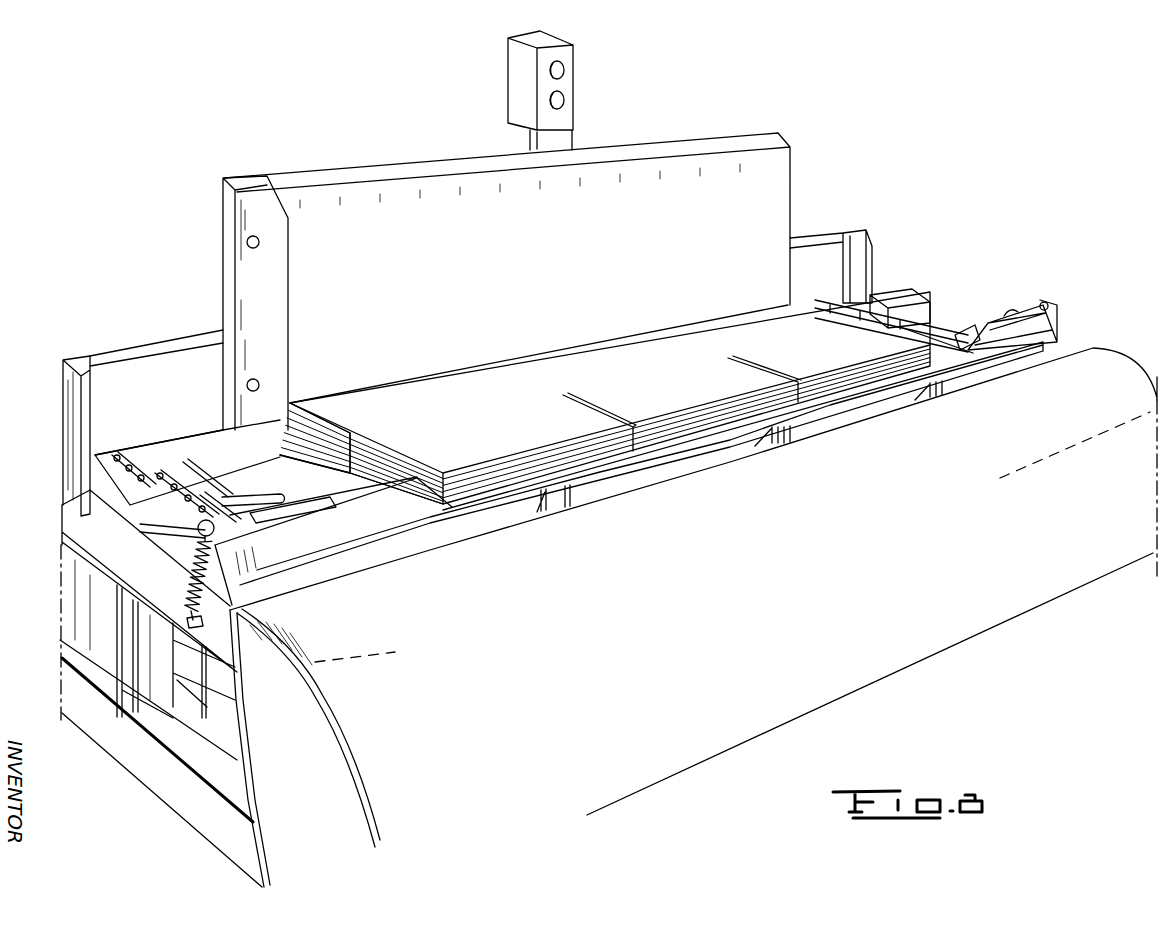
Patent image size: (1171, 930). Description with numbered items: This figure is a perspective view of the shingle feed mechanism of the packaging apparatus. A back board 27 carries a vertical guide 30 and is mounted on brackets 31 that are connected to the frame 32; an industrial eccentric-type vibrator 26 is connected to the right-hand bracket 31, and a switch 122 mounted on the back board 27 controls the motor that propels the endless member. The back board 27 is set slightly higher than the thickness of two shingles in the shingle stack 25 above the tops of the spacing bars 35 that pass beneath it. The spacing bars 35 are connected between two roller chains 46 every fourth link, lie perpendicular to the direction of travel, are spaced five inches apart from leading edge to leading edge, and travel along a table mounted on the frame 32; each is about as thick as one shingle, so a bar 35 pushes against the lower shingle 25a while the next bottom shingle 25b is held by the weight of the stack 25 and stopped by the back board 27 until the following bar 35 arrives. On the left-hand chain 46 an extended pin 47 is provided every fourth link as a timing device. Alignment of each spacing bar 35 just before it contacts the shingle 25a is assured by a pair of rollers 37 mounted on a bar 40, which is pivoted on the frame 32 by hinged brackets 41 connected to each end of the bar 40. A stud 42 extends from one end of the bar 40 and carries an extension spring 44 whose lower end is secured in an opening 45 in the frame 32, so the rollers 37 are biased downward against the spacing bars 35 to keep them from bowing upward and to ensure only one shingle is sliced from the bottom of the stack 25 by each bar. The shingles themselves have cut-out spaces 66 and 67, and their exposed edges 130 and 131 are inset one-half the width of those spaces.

The switch 122 is at (573, 87).
The back board 27 is at (570, 250).
The vertical guide 30 is at (247, 252).
The brackets 31 is at (171, 390).
The exposed edge 131 is at (877, 325).
The industrial eccentric-type vibrator 26 is at (932, 321).
The roller chains 46 is at (150, 454).
The stud 42 is at (276, 514).
The shingle stack 25 is at (680, 343).
The exposed edge 130 is at (350, 436).
The lower shingle 25a is at (322, 468).
The next bottom shingle 25b is at (361, 477).
The cut-out space 66 is at (607, 414).
The cut-out space 67 is at (757, 368).
The bar 40 is at (693, 446).
The rollers 37 is at (808, 427).
The spacing bars 35 is at (253, 475).
The extended pin 47 is at (183, 463).
The brackets 41 is at (242, 568).
The extension spring 44 is at (199, 569).
The opening 45 is at (199, 618).
The frame 32 is at (112, 546).